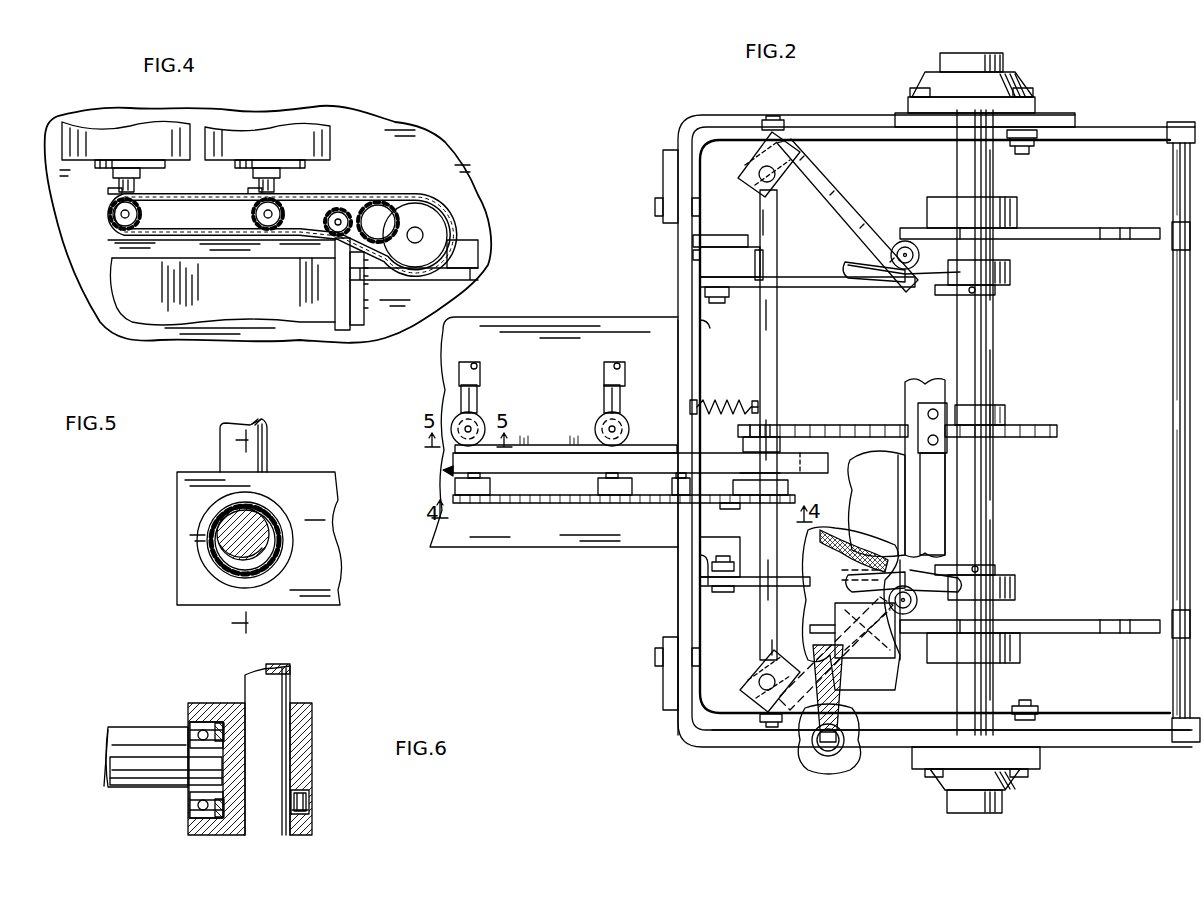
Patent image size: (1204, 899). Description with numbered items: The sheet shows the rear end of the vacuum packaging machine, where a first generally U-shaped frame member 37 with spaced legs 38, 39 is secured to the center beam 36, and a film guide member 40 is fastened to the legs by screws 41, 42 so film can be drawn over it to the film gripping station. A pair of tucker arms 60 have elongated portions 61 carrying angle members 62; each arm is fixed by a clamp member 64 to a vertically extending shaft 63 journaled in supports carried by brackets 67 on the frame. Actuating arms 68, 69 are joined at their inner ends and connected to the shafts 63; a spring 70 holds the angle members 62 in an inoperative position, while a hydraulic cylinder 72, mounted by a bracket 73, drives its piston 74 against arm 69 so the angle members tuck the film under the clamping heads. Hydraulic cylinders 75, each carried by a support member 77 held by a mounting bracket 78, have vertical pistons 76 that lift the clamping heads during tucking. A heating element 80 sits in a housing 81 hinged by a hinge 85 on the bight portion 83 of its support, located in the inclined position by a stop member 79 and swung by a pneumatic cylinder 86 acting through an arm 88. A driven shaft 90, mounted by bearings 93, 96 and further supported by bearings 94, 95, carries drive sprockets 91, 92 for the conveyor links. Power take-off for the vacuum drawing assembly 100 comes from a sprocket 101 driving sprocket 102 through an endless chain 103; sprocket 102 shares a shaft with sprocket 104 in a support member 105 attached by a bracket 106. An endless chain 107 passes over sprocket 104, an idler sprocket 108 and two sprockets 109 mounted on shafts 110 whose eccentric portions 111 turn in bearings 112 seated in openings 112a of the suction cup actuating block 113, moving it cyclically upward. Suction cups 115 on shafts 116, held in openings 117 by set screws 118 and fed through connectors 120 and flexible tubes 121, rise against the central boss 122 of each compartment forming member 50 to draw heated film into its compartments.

In FIG. 2, the center beam 36 is at (530, 547).
In FIG. 4, the first generally U-shaped frame member 37 is at (334, 300).
In FIG. 2, the first generally U-shaped frame member 37 is at (676, 606).
In FIG. 2, the leg 38 is at (745, 745).
In FIG. 2, the leg 39 is at (830, 113).
In FIG. 2, the film guide member 40 is at (1170, 448).
In FIG. 2, the screw 41 is at (1022, 145).
In FIG. 2, the screw 42 is at (1032, 710).
In FIG. 4, the compartment forming member 50 is at (96, 165).
In FIG. 2, the tucker arm 60 is at (815, 190).
In FIG. 2, the elongated portion 61 is at (875, 285).
In FIG. 2, the angle member 62 is at (855, 268).
In FIG. 2, the vertically extending shaft 63 is at (775, 165).
In FIG. 2, the clamp member 64 is at (760, 185).
In FIG. 2, the bracket 67 is at (701, 150).
In FIG. 2, the actuating arm 68 is at (758, 537).
In FIG. 2, the actuating arm 69 is at (778, 345).
In FIG. 2, the spring 70 is at (730, 402).
In FIG. 2, the hydraulic cylinder 72 is at (705, 266).
In FIG. 2, the bracket 73 is at (700, 237).
In FIG. 2, the piston 74 is at (758, 258).
In FIG. 2, the hydraulic cylinder 75 is at (900, 240).
In FIG. 2, the piston 76 is at (912, 252).
In FIG. 2, the support member 77 is at (805, 285).
In FIG. 2, the mounting bracket 78 is at (704, 324).
In FIG. 2, the stop member 79 is at (906, 398).
In FIG. 2, the heating element 80 is at (825, 528).
In FIG. 2, the housing 81 is at (870, 472).
In FIG. 2, the bight portion 83 is at (950, 460).
In FIG. 2, the hinge 85 is at (905, 520).
In FIG. 2, the pneumatic cylinder 86 is at (808, 768).
In FIG. 2, the arm 88 is at (838, 680).
In FIG. 2, the driven shaft 90 is at (985, 374).
In FIG. 2, the drive sprocket 91 is at (1125, 632).
In FIG. 2, the drive sprocket 92 is at (1114, 208).
In FIG. 2, the bearing 93 is at (1003, 60).
In FIG. 2, the bearing 94 is at (990, 288).
In FIG. 2, the bearing 95 is at (1000, 568).
In FIG. 2, the bearing 96 is at (1005, 800).
In FIG. 2, the vacuum drawing assembly 100 is at (447, 468).
In FIG. 2, the sprocket 101 is at (1035, 425).
In FIG. 2, the sprocket 102 is at (745, 430).
In FIG. 4, the endless chain 103 is at (422, 232).
In FIG. 2, the endless chain 103 is at (845, 425).
In FIG. 4, the sprocket 104 is at (450, 234).
In FIG. 2, the sprocket 104 is at (770, 496).
In FIG. 4, the support member 105 is at (372, 202).
In FIG. 2, the support member 105 is at (660, 455).
In FIG. 4, the bracket 106 is at (366, 300).
In FIG. 4, the endless chain 107 is at (345, 196).
In FIG. 2, the endless chain 107 is at (558, 503).
In FIG. 4, the idler sprocket 108 is at (333, 232).
In FIG. 2, the idler sprocket 108 is at (720, 506).
In FIG. 4, the sprocket 109 is at (125, 232).
In FIG. 2, the sprocket 109 is at (490, 500).
In FIG. 5, the shaft 110 is at (256, 512).
In FIG. 6, the shaft 110 is at (130, 740).
In FIG. 2, the shaft 110 is at (604, 478).
In FIG. 5, the eccentric portion 111 is at (226, 560).
In FIG. 6, the eccentric portion 111 is at (196, 776).
In FIG. 5, the bearing 112 is at (294, 548).
In FIG. 6, the bearing 112 is at (196, 727).
In FIG. 5, the opening 112a is at (280, 578).
In FIG. 6, the opening 112a is at (212, 722).
In FIG. 5, the suction cup actuating block 113 is at (322, 516).
In FIG. 6, the suction cup actuating block 113 is at (190, 710).
In FIG. 2, the suction cup actuating block 113 is at (538, 436).
In FIG. 4, the suction cup 115 is at (140, 177).
In FIG. 2, the suction cup 115 is at (476, 412).
In FIG. 4, the shaft 116 is at (114, 193).
In FIG. 5, the shaft 116 is at (266, 460).
In FIG. 6, the shaft 116 is at (285, 682).
In FIG. 6, the opening 117 is at (296, 735).
In FIG. 6, the set screw 118 is at (312, 800).
In FIG. 2, the connector 120 is at (462, 392).
In FIG. 2, the flexible tube 121 is at (476, 370).
In FIG. 4, the central boss 122 is at (170, 160).